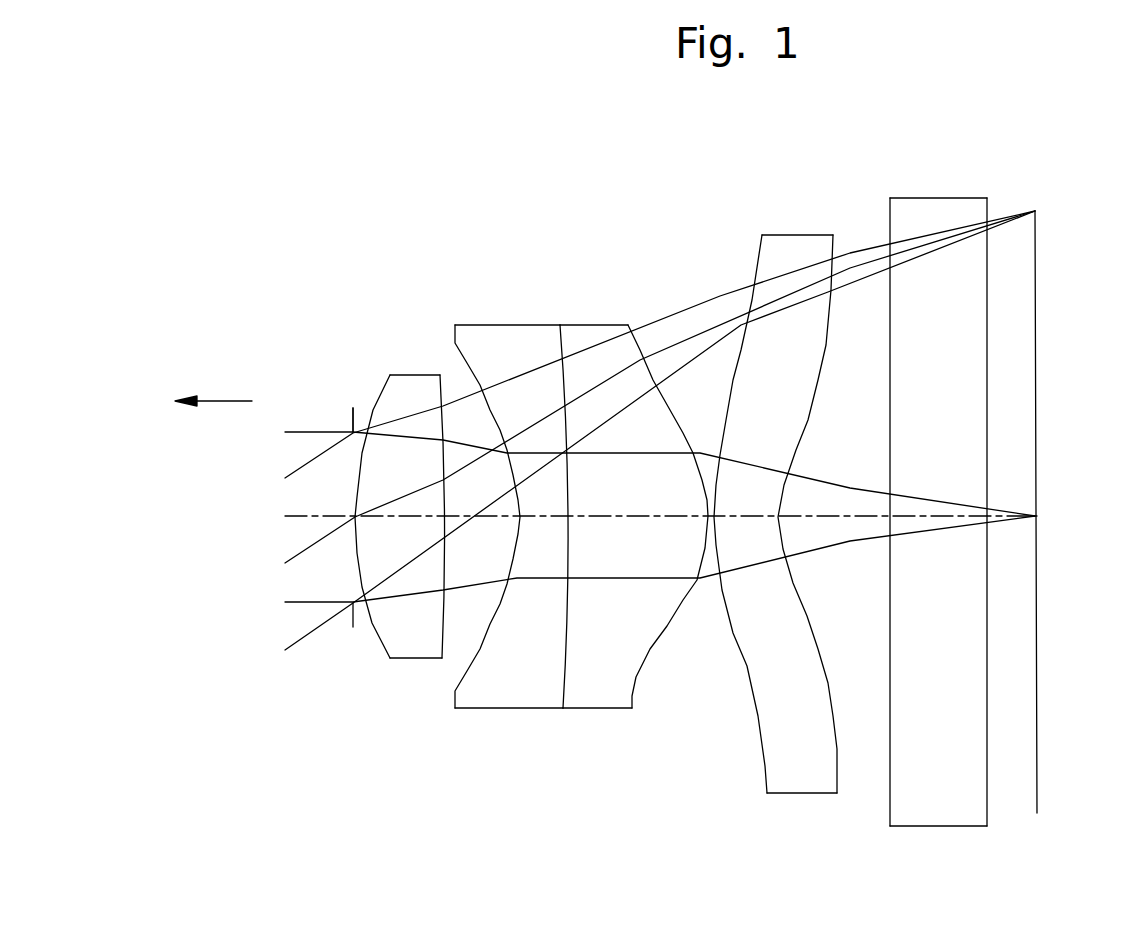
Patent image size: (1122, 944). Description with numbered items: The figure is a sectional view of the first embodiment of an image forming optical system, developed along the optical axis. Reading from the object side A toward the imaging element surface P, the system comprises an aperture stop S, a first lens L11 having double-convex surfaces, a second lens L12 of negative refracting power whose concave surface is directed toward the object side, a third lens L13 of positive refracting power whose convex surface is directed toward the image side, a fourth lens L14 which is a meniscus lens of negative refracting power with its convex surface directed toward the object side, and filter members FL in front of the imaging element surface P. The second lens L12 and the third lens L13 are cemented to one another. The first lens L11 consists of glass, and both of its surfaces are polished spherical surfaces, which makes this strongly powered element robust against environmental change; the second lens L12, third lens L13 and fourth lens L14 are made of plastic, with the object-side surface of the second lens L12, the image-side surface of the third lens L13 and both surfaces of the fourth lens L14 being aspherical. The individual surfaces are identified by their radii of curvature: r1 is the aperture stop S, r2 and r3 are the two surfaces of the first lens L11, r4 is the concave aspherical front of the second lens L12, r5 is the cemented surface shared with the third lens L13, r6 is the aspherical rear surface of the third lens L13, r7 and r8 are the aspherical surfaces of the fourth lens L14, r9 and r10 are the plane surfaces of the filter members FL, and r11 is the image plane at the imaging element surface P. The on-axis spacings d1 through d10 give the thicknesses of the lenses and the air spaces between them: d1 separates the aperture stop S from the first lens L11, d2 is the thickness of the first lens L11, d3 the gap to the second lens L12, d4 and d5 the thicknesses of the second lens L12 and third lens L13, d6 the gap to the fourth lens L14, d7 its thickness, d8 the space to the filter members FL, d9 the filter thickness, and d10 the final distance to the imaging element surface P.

The object side A is at (213, 384).
The aperture stop S is at (334, 523).
The first lens L11 is at (399, 557).
The second lens L12 is at (505, 554).
The third lens L13 is at (634, 553).
The fourth lens L14 is at (776, 530).
The filter members FL is at (939, 529).
The imaging element surface P is at (1064, 507).
The radius of curvature of first surface r1 is at (353, 408).
The radius of curvature of second surface r2 is at (388, 376).
The radius of curvature of third surface r3 is at (447, 395).
The radius of curvature of fourth surface r4 is at (456, 360).
The radius of curvature of fifth surface r5 is at (560, 348).
The radius of curvature of sixth surface r6 is at (641, 345).
The radius of curvature of seventh surface r7 is at (731, 382).
The radius of curvature of eighth surface r8 is at (832, 337).
The radius of curvature of ninth surface r9 is at (889, 222).
The radius of curvature of tenth surface r10 is at (987, 212).
The radius of curvature of eleventh surface r11 is at (1025, 212).
The air space between aperture stop and first lens d1 is at (355, 520).
The thickness of first lens d2 is at (405, 517).
The air space between first lens and second lens d3 is at (483, 515).
The thickness of second lens d4 is at (550, 515).
The thickness of third lens d5 is at (635, 517).
The air space between third lens and fourth lens d6 is at (711, 517).
The thickness of fourth lens d7 is at (762, 516).
The air space between fourth lens and filter members d8 is at (832, 517).
The thickness of filter members d9 is at (945, 518).
The air space between filter members and image plane d10 is at (1015, 518).